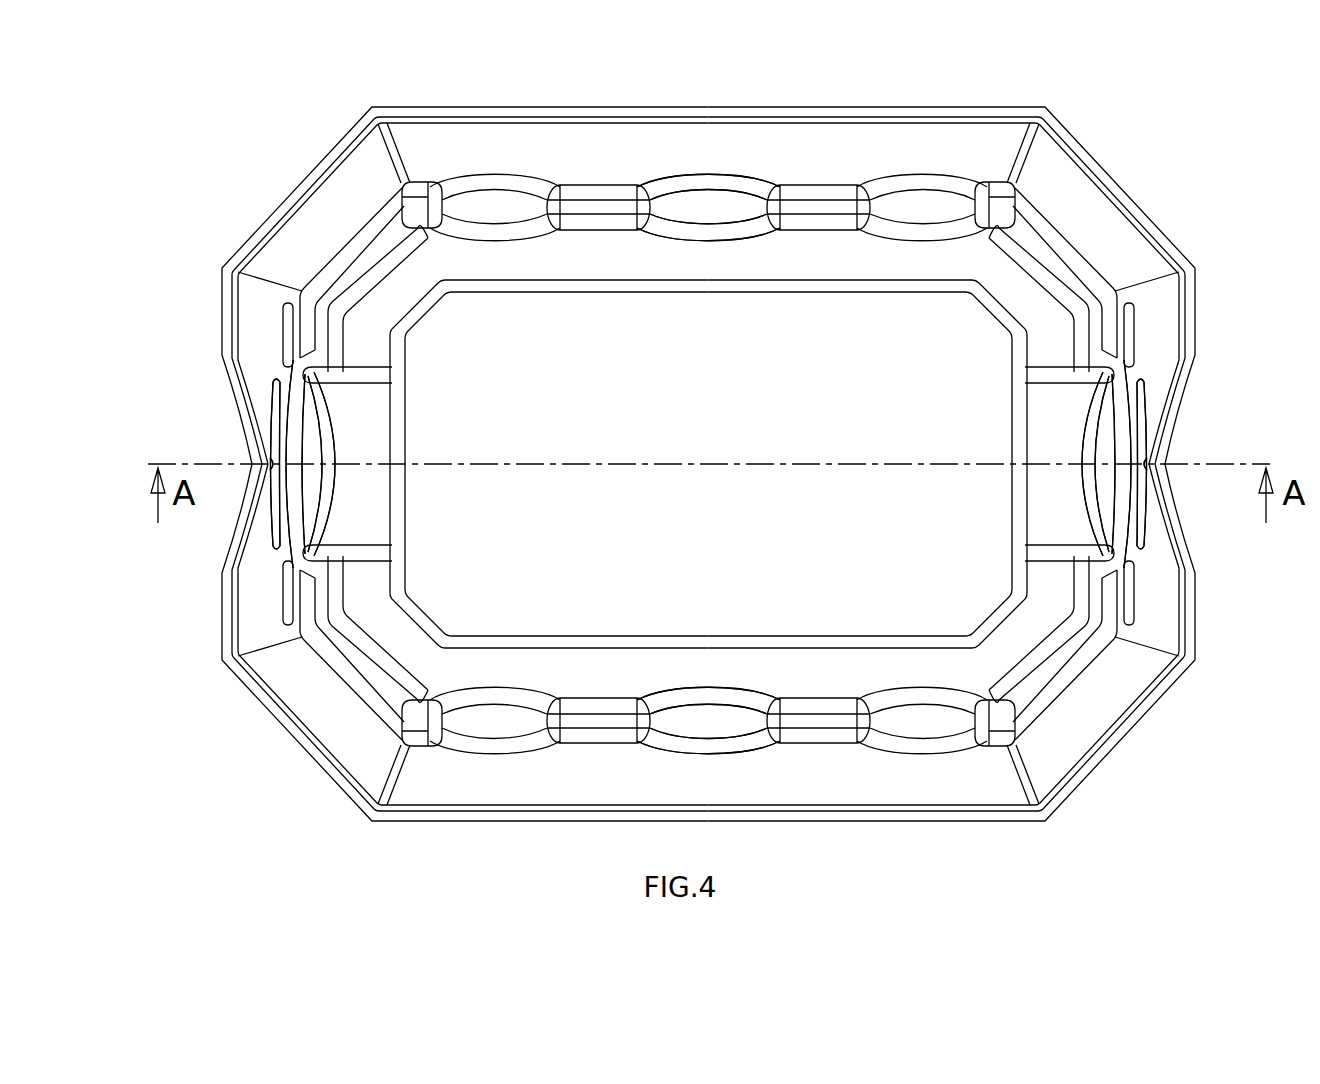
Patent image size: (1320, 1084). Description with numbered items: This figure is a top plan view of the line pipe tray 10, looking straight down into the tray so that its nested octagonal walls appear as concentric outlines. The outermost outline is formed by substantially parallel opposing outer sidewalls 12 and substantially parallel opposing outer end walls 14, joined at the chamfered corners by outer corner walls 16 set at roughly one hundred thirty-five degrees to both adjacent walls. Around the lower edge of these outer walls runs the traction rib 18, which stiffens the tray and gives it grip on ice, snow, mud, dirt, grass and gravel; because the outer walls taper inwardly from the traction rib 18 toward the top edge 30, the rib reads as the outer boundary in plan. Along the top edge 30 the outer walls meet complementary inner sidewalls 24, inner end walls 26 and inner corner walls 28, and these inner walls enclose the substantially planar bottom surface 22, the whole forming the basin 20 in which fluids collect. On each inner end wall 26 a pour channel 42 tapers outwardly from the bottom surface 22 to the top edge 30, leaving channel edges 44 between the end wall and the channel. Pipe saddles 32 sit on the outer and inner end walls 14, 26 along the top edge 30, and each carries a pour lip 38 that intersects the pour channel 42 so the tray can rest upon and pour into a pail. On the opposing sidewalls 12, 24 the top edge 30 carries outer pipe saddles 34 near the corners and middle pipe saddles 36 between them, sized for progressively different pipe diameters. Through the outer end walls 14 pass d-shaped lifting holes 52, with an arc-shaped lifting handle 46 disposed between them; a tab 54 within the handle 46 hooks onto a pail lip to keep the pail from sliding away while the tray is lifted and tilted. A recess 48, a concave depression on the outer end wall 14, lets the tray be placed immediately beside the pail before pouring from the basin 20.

The line pipe tray 10 is at (184, 866).
The outer sidewalls 12 is at (980, 147).
The outer end walls 14 is at (250, 635).
The outer corner walls 16 is at (288, 247).
The traction rib 18 is at (1128, 735).
The basin 20 is at (522, 595).
The bottom surface 22 is at (548, 560).
The inner sidewalls 24 is at (640, 262).
The inner end walls 26 is at (367, 350).
The inner corner walls 28 is at (413, 291).
The top edge 30 is at (377, 245).
The pipe saddles 32 is at (272, 527).
The outer pipe saddles 34 is at (497, 212).
The middle pipe saddles 36 is at (708, 212).
The pour lip 38 is at (270, 505).
The pour channel 42 is at (367, 440).
The channel edges 44 is at (345, 392).
The lifting handle 46 is at (278, 393).
The recess 48 is at (225, 437).
The lifting holes 52 is at (283, 333).
The tab 54 is at (272, 475).